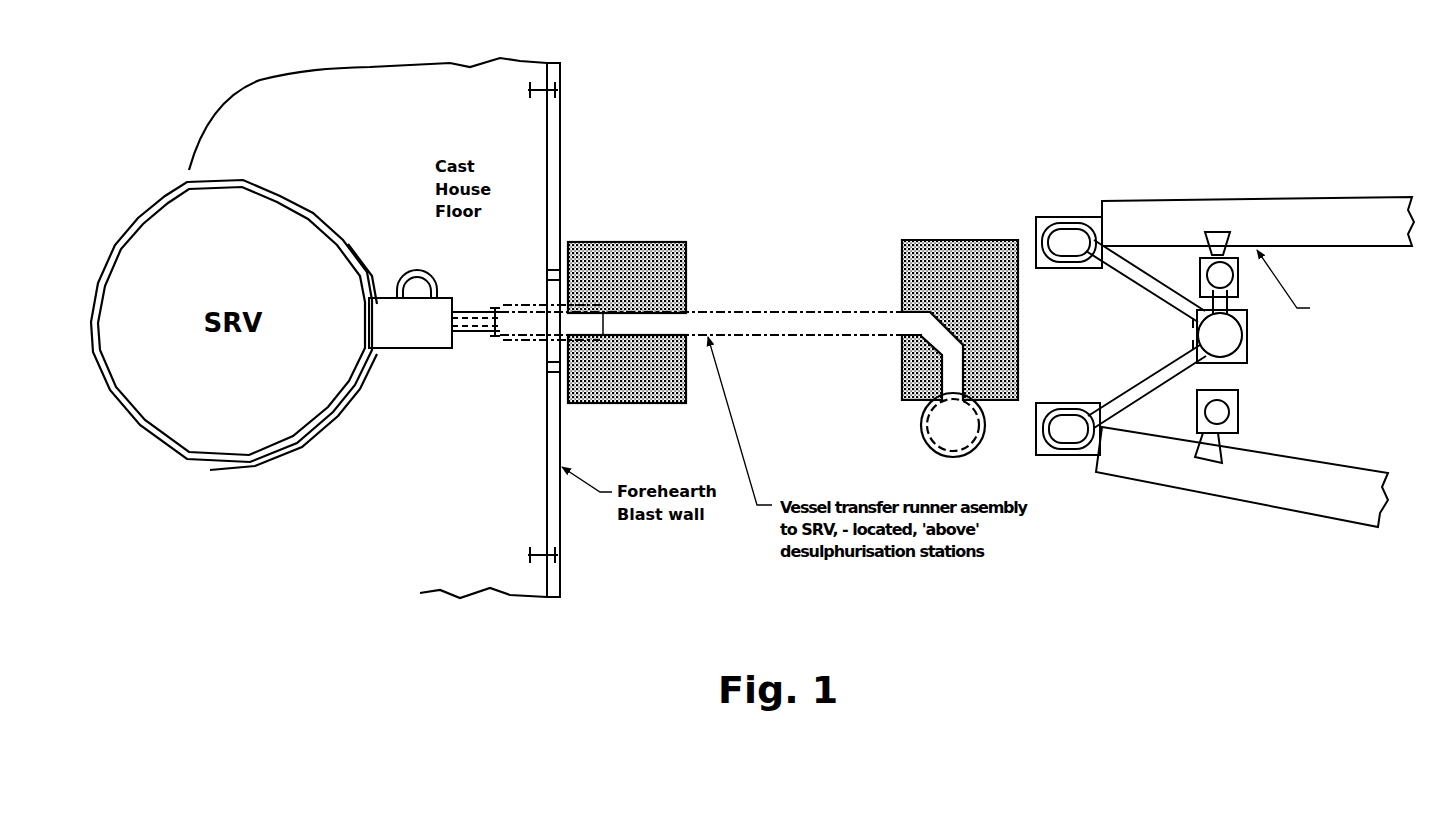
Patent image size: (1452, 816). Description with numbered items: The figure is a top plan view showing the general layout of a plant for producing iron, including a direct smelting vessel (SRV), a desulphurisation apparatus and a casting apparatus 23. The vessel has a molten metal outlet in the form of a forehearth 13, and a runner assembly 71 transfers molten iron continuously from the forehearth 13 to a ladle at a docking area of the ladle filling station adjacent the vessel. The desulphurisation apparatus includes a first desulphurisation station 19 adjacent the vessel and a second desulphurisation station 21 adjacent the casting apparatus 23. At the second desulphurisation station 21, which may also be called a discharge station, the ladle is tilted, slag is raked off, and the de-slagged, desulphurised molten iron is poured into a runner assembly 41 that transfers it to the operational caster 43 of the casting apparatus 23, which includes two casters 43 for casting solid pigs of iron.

The forehearth 13 is at (408, 337).
The runner assembly 71 is at (495, 340).
The first desulphurisation station 19 is at (697, 256).
The second desulphurisation station 21 is at (888, 256).
The casting apparatus 23 is at (1168, 172).
The runner assembly 41 is at (1266, 313).
The casters 43 is at (1266, 212).